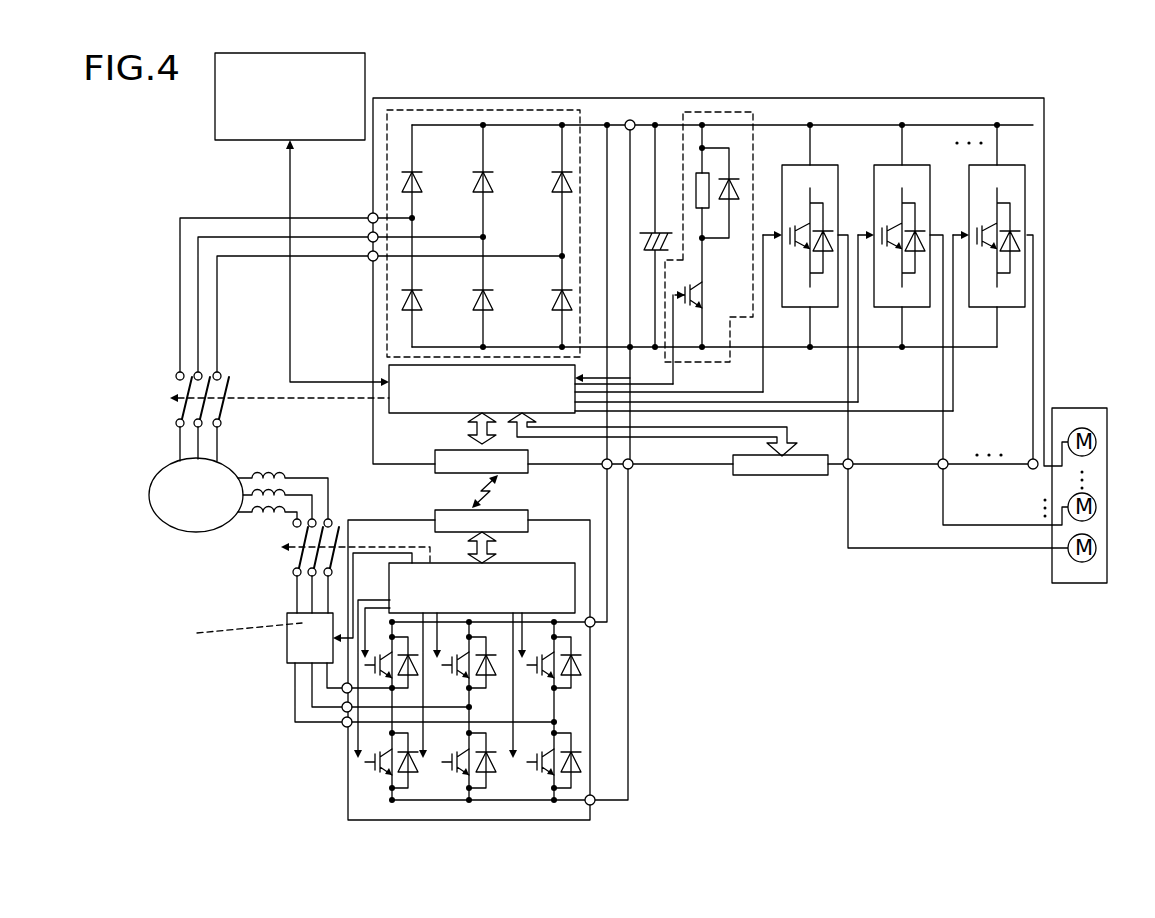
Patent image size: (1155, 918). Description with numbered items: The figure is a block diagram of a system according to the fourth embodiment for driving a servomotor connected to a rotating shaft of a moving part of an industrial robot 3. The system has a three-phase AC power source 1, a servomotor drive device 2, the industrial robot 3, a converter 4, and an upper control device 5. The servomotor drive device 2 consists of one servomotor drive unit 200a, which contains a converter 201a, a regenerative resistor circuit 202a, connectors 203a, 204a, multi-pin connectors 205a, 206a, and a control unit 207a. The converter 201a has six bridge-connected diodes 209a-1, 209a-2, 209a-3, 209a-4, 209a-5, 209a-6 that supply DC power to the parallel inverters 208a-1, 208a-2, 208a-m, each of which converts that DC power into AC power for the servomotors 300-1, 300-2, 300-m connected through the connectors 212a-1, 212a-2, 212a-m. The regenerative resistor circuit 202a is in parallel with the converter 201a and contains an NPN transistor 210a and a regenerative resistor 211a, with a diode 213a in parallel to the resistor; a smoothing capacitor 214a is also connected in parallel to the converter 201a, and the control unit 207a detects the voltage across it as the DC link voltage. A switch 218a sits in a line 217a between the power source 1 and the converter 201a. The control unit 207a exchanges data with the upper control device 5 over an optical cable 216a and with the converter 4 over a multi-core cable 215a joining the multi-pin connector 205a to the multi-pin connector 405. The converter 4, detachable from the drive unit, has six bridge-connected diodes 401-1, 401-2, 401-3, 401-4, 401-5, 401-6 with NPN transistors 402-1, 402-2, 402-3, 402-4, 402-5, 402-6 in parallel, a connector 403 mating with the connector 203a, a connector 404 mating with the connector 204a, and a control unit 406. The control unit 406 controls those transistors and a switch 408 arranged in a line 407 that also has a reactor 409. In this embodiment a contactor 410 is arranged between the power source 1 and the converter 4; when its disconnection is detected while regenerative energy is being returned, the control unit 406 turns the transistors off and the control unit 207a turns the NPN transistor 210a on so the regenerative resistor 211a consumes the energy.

The three-phase AC power source 1 is at (166, 526).
The servomotor drive device 2 is at (870, 97).
The industrial robot 3 is at (1058, 408).
The converter 4 is at (347, 755).
The upper control device 5 is at (368, 80).
The servomotor drive unit 200a is at (470, 97).
The converter 201a is at (566, 108).
The regenerative resistor circuit 202a is at (737, 110).
The connector 203a is at (603, 470).
The connector 204a is at (632, 471).
The multi-pin connector 205a is at (435, 470).
The multi-pin connector 206a is at (780, 476).
The control unit 207a is at (450, 414).
The inverter 208a-1 is at (857, 152).
The inverter 208a-2 is at (915, 165).
The inverter 208a-m is at (1028, 192).
The diode 209a-1 is at (442, 160).
The diode 209a-2 is at (442, 285).
The diode 209a-3 is at (516, 160).
The diode 209a-4 is at (516, 285).
The diode 209a-5 is at (557, 200).
The diode 209a-6 is at (557, 316).
The NPN transistor 210a is at (701, 297).
The regenerative resistor 211a is at (710, 186).
The connector 212a-1 is at (848, 471).
The connector 212a-2 is at (938, 464).
The connector 212a-m is at (1032, 459).
The diode 213a is at (736, 186).
The smoothing capacitor 214a is at (657, 228).
The multi-core cable 215a is at (470, 495).
The optical cable 216a is at (291, 185).
The line 217a is at (176, 259).
The switch 218a is at (169, 415).
The servomotor 300-1 is at (1062, 565).
The servomotor 300-2 is at (1060, 510).
The servomotor 300-m is at (1081, 412).
The diode 401-1 is at (412, 690).
The diode 401-2 is at (487, 688).
The diode 401-3 is at (579, 668).
The diode 401-4 is at (405, 792).
The diode 401-5 is at (486, 790).
The diode 401-6 is at (579, 765).
The NPN transistor 402-1 is at (380, 672).
The NPN transistor 402-2 is at (457, 670).
The NPN transistor 402-3 is at (548, 670).
The NPN transistor 402-4 is at (380, 775).
The NPN transistor 402-5 is at (455, 790).
The NPN transistor 402-6 is at (540, 790).
The connector 403 is at (595, 620).
The connector 404 is at (595, 799).
The multi-pin connector 405 is at (532, 517).
The control unit 406 is at (535, 563).
The line 407 is at (292, 727).
The switch 408 is at (274, 568).
The reactor 409 is at (258, 469).
The contactor 410 is at (285, 641).